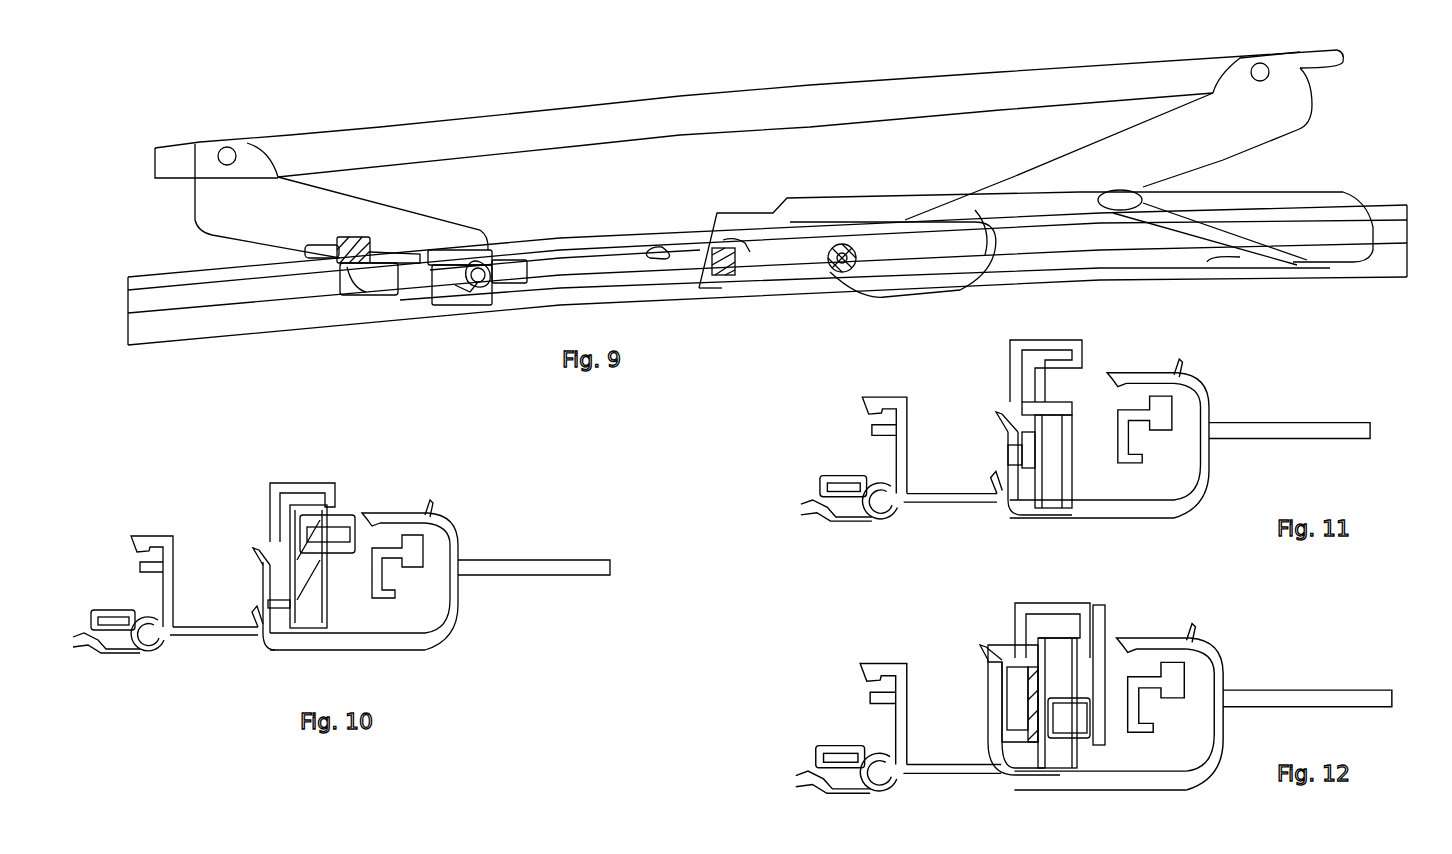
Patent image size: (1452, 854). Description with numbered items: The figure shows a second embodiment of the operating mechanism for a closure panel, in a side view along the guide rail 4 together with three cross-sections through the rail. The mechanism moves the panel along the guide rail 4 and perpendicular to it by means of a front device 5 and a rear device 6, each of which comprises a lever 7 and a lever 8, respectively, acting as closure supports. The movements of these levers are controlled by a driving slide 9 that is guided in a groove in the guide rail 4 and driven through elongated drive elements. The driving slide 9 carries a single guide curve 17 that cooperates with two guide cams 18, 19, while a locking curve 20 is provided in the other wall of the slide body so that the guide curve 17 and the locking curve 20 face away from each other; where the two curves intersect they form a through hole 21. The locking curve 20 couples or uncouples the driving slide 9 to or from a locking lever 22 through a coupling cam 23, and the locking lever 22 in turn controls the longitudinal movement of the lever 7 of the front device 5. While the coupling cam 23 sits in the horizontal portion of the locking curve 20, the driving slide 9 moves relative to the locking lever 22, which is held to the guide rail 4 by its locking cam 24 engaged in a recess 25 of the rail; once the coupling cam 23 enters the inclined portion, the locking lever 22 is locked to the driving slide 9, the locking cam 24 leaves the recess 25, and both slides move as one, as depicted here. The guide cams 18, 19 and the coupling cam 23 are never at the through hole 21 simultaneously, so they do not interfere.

In FIG. 10, the guide rail 4 is at (423, 625).
In FIG. 11, the guide rail 4 is at (1172, 490).
In FIG. 12, the guide rail 4 is at (1183, 765).
In FIG. 9, the front device 5 is at (250, 350).
In FIG. 9, the rear device 6 is at (1362, 293).
In FIG. 9, the lever 7 is at (212, 203).
In FIG. 9, the lever 8 is at (1300, 102).
In FIG. 12, the lever 8 is at (1098, 640).
In FIG. 9, the driving slide 9 is at (800, 268).
In FIG. 10, the driving slide 9 is at (305, 612).
In FIG. 11, the driving slide 9 is at (1068, 462).
In FIG. 12, the driving slide 9 is at (1070, 758).
In FIG. 9, the guide curve 17 is at (1318, 252).
In FIG. 11, the guide curve 17 is at (1012, 392).
In FIG. 9, the guide cam 18 is at (1127, 212).
In FIG. 10, the guide cam 18 is at (340, 522).
In FIG. 12, the guide cam 18 is at (1083, 725).
In FIG. 9, the guide cam 19 is at (850, 266).
In FIG. 9, the locking curve 20 is at (737, 270).
In FIG. 9, the through hole 21 is at (990, 258).
In FIG. 9, the locking lever 22 is at (560, 285).
In FIG. 11, the locking lever 22 is at (1035, 435).
In FIG. 12, the locking lever 22 is at (1030, 700).
In FIG. 9, the coupling cam 23 is at (740, 258).
In FIG. 11, the coupling cam 23 is at (1045, 428).
In FIG. 12, the coupling cam 23 is at (1018, 770).
In FIG. 9, the locking cam 24 is at (669, 262).
In FIG. 9, the recess 25 is at (358, 285).
In FIG. 12, the recess 25 is at (1012, 675).